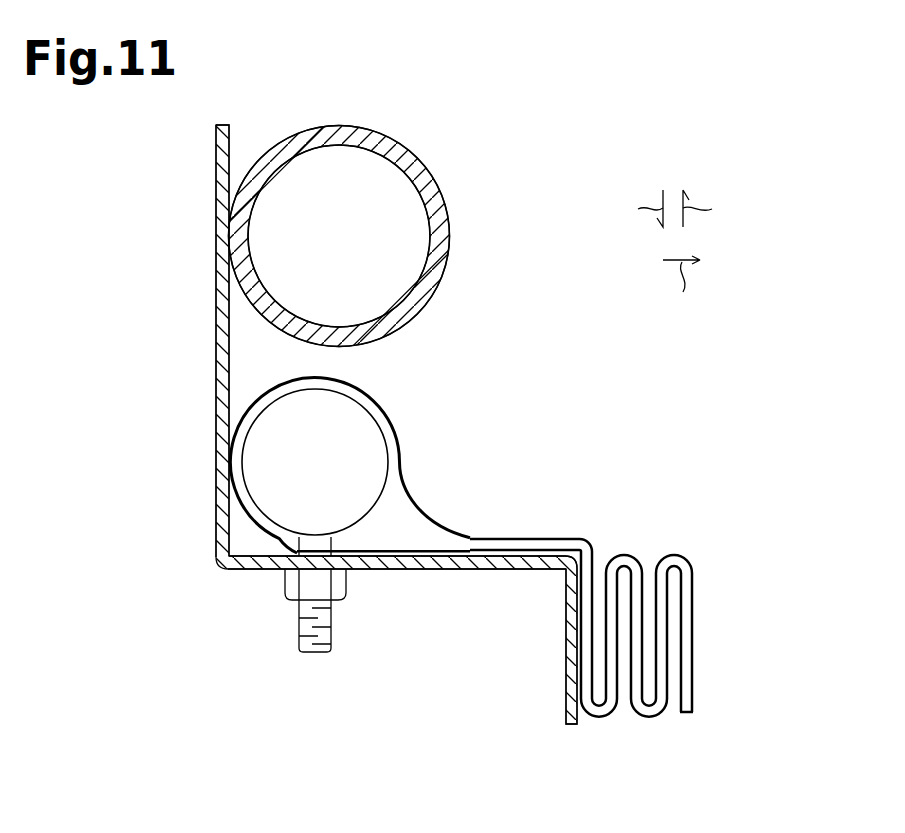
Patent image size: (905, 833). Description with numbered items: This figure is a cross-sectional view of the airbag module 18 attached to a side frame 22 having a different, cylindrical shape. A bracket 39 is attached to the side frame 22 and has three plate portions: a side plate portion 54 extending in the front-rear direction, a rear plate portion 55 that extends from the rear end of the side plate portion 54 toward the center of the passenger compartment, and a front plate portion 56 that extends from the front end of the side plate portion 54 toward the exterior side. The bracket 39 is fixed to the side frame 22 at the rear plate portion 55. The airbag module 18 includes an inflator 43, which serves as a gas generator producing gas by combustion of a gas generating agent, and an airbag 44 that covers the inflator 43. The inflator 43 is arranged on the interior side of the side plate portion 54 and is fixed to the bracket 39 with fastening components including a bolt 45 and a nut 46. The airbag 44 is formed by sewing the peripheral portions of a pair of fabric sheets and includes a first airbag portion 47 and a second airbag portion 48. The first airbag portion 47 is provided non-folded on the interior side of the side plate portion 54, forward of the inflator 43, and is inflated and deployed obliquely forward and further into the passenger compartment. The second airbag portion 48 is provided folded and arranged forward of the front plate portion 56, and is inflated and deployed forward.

The airbag module 18 is at (542, 394).
The side frame 22 is at (449, 233).
The bracket 39 is at (218, 401).
The inflator 43 is at (366, 412).
The airbag 44 is at (560, 537).
The bolt 45 is at (300, 629).
The nut 46 is at (287, 583).
The first airbag portion 47 is at (483, 537).
The second airbag portion 48 is at (694, 641).
The side plate portion 54 is at (433, 565).
The rear plate portion 55 is at (218, 313).
The front plate portion 56 is at (568, 643).